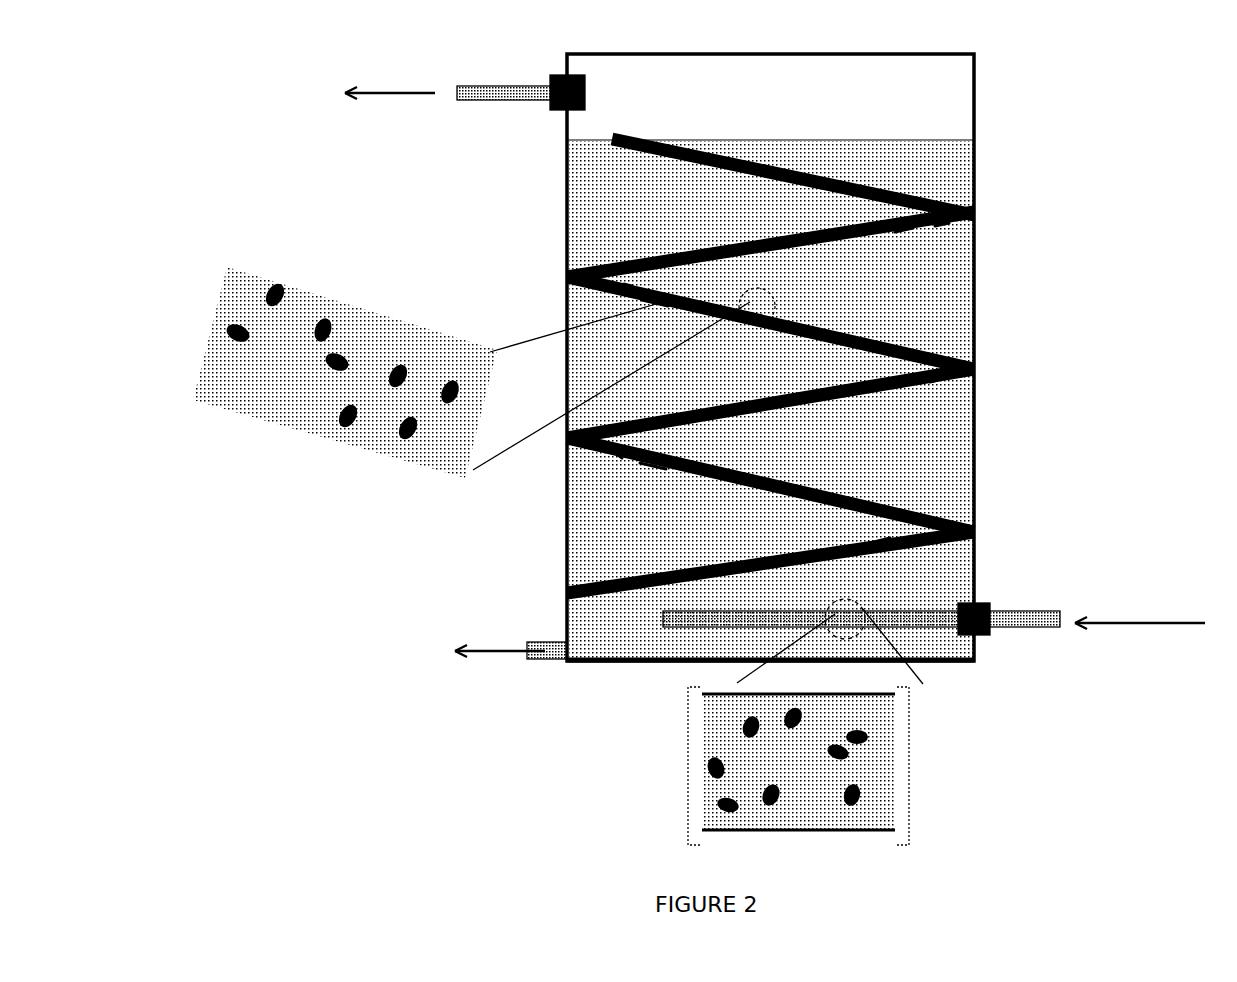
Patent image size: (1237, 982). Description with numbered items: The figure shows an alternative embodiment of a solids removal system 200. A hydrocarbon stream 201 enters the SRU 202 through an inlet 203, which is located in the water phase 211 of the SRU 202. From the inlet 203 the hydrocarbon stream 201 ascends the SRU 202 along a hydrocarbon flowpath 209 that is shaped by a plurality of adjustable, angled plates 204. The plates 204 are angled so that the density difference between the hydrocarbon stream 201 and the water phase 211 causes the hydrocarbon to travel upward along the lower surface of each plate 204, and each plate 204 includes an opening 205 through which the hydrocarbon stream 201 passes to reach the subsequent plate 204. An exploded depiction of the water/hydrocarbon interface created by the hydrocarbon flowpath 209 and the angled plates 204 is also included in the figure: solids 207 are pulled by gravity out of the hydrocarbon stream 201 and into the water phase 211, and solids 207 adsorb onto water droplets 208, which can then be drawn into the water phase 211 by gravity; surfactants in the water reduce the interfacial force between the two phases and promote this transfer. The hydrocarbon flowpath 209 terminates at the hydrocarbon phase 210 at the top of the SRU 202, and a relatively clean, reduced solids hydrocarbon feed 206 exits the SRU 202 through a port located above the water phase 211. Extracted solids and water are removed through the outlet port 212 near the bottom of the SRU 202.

The solids removal system 200 is at (1046, 108).
The hydrocarbon stream 201 is at (1140, 638).
The SRU 202 is at (606, 680).
The inlet 203 is at (1000, 642).
The adjustable, angled plates 204 is at (974, 218).
The opening 205 is at (922, 386).
The reduced solids hydrocarbon feed 206 is at (465, 106).
The solids 207 is at (340, 422).
The water droplets 208 is at (268, 297).
The hydrocarbon flowpath 209 is at (683, 490).
The hydrocarbon phase 210 is at (830, 102).
The water phase 211 is at (625, 366).
The outlet port 212 is at (511, 668).